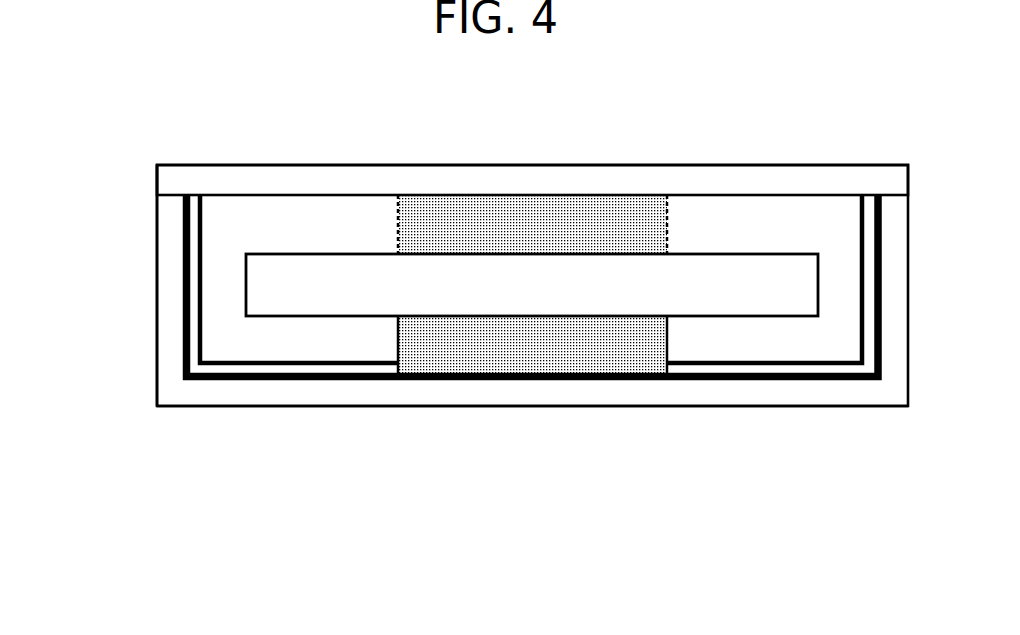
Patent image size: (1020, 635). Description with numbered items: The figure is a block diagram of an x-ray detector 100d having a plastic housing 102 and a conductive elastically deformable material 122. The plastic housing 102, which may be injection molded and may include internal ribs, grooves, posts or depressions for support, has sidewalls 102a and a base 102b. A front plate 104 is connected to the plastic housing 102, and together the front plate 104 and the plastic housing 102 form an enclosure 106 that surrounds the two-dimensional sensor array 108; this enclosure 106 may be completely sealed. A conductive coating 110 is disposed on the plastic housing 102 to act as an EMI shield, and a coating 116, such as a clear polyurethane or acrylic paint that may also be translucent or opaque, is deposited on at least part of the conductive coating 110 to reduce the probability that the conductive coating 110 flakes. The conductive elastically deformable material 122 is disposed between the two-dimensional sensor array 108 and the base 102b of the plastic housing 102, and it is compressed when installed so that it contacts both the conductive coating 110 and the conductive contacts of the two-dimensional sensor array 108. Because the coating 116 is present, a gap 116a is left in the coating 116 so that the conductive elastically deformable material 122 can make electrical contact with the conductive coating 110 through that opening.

The x-ray detector 100d is at (160, 96).
The plastic housing 102 is at (178, 480).
The sidewalls 102a is at (155, 371).
The base 102b is at (230, 407).
The front plate 104 is at (213, 165).
The enclosure 106 is at (793, 342).
The two-dimensional sensor array 108 is at (697, 317).
The conductive coating 110 is at (310, 380).
The coating 116 is at (860, 212).
The gap 116a is at (670, 463).
The conductive elastically deformable material 122 is at (592, 345).